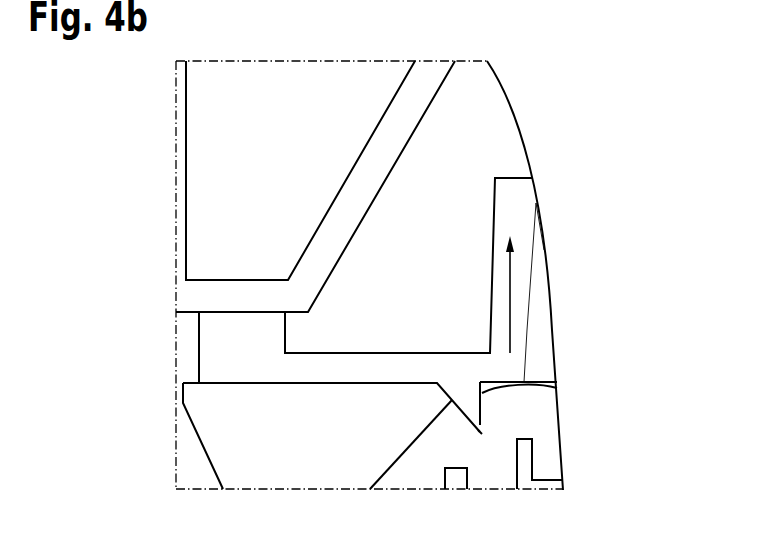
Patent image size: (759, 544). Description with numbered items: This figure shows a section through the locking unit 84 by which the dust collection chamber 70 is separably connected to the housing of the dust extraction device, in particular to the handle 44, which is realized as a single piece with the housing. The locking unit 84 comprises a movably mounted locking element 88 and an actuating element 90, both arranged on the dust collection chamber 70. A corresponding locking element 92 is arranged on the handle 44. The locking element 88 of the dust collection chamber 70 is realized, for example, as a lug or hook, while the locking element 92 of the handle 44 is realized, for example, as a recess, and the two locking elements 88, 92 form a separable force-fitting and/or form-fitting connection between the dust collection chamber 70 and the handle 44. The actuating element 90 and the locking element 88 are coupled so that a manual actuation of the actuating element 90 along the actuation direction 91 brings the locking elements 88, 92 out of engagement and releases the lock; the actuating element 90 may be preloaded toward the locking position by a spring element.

The dust collection chamber 70 is at (480, 120).
The actuating element 90 is at (510, 207).
The actuation direction 91 is at (510, 302).
The locking unit 84 is at (603, 343).
The locking element 88 is at (473, 408).
The corresponding locking element 92 is at (480, 432).
The handle 44 is at (548, 468).